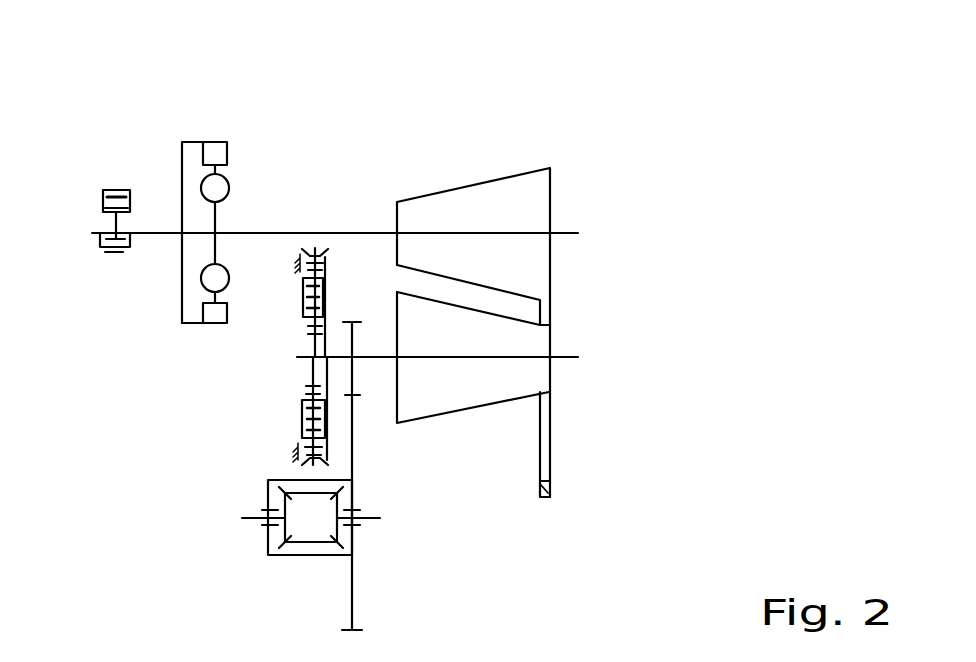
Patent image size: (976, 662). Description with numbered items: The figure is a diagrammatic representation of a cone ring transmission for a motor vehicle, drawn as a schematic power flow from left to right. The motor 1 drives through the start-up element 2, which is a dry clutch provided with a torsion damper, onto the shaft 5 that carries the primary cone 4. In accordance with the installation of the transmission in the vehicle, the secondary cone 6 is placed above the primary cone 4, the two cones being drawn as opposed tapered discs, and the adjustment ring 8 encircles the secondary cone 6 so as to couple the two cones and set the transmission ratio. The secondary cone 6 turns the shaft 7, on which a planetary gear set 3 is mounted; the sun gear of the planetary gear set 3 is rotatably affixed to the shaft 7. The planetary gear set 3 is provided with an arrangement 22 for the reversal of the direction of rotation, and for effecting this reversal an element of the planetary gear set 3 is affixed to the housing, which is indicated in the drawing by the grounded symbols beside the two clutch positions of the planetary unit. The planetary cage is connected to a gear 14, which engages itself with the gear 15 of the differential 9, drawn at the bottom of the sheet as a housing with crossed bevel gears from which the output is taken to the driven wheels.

The motor 1 is at (108, 190).
The start-up element 2 is at (198, 142).
The planetary gear set 3 is at (305, 425).
The primary cone 4 is at (503, 175).
The shaft 5 is at (562, 235).
The secondary cone 6 is at (433, 417).
The shaft 7 is at (572, 358).
The adjustment ring 8 is at (550, 483).
The differential 9 is at (290, 556).
The gear 14 is at (356, 322).
The gear 15 is at (352, 438).
The arrangement for reversal of rotational direction 22 is at (327, 257).